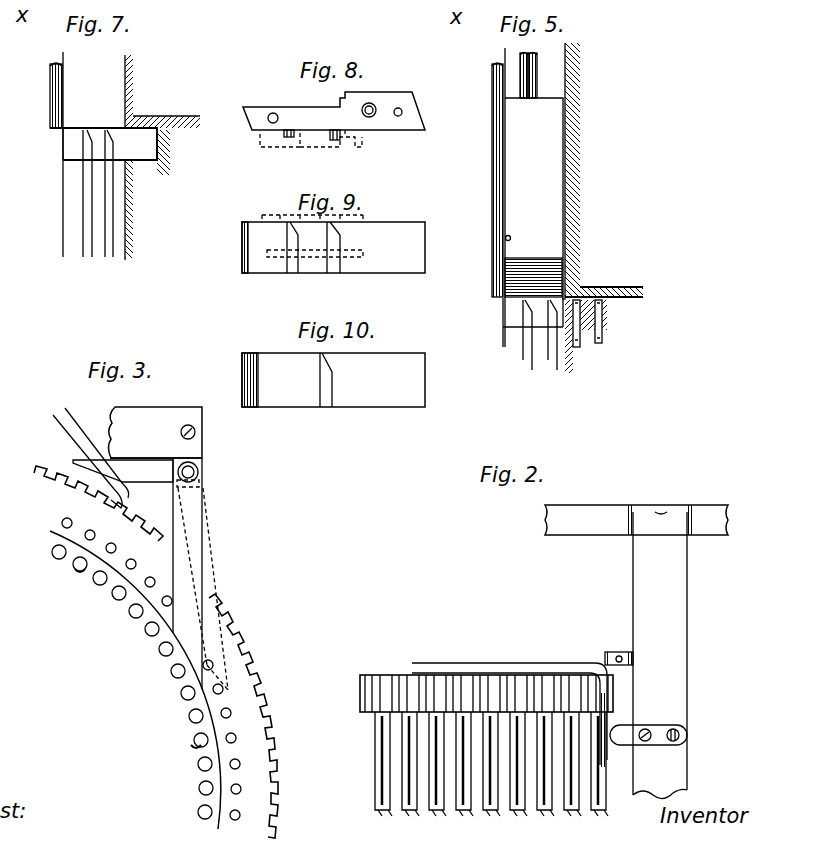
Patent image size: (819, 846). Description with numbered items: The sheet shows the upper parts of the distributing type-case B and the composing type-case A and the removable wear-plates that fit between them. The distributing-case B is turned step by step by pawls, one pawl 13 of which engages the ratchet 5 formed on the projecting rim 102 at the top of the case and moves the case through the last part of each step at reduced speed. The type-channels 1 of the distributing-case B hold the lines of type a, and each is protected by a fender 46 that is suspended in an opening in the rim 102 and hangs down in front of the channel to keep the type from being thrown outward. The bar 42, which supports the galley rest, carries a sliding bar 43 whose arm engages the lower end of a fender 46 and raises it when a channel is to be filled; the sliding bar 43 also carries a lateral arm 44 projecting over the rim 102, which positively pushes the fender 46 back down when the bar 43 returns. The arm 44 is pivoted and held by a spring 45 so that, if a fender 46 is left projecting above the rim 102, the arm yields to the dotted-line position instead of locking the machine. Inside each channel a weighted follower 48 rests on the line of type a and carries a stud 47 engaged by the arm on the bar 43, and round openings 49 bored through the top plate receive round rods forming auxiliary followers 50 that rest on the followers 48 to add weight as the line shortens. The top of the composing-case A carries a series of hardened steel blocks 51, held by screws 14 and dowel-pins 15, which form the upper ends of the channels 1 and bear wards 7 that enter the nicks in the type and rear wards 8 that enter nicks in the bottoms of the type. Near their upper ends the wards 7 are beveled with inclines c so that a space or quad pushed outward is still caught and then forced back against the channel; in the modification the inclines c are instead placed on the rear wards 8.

In FIG. 7, the type-channels 1 is at (83, 163).
In FIG. 2, the type-channels 1 is at (390, 816).
In FIG. 3, the ratchet 5 is at (232, 622).
In FIG. 2, the ratchet 5 is at (395, 675).
In FIG. 7, the wards 7 is at (105, 148).
In FIG. 8, the wards 7 is at (299, 130).
In FIG. 9, the wards 7 is at (318, 264).
In FIG. 5, the wards 7 is at (534, 364).
In FIG. 8, the rear wards 8 is at (340, 100).
In FIG. 10, the rear wards 8 is at (334, 376).
In FIG. 3, the pawl 13 is at (130, 498).
In FIG. 5, the screws 14 is at (580, 348).
In FIG. 5, the dowel-pins 15 is at (601, 343).
In FIG. 2, the bar 42 is at (660, 653).
In FIG. 3, the sliding bar 43 is at (203, 466).
In FIG. 2, the sliding bar 43 is at (648, 752).
In FIG. 3, the lateral arm 44 is at (212, 590).
In FIG. 2, the lateral arm 44 is at (540, 668).
In FIG. 3, the spring 45 is at (205, 488).
In FIG. 2, the spring 45 is at (607, 722).
In FIG. 7, the fenders 46 is at (50, 97).
In FIG. 5, the fenders 46 is at (492, 172).
In FIG. 3, the fenders 46 is at (136, 565).
In FIG. 2, the fenders 46 is at (378, 778).
In FIG. 5, the studs 47 is at (516, 233).
In FIG. 5, the follower 48 is at (534, 199).
In FIG. 5, the round openings 49 is at (530, 54).
In FIG. 3, the round openings 49 is at (144, 633).
In FIG. 5, the auxiliary followers 50 is at (538, 78).
In FIG. 3, the auxiliary followers 50 is at (77, 572).
In FIG. 7, the removable plates or blocks 51 is at (103, 144).
In FIG. 8, the removable plates or blocks 51 is at (332, 130).
In FIG. 9, the removable plates or blocks 51 is at (333, 247).
In FIG. 10, the removable plates or blocks 51 is at (333, 380).
In FIG. 5, the removable plates or blocks 51 is at (533, 322).
In FIG. 3, the projecting rim 102 is at (250, 723).
In FIG. 2, the projecting rim 102 is at (366, 713).
In FIG. 7, the composing type-case A is at (147, 194).
In FIG. 5, the composing type-case A is at (600, 336).
In FIG. 7, the distributing type-case B is at (162, 157).
In FIG. 5, the distributing type-case B is at (604, 171).
In FIG. 3, the distributing type-case B is at (135, 680).
In FIG. 2, the distributing type-case B is at (509, 816).
In FIG. 8, the line of type a is at (258, 138).
In FIG. 9, the line of type a is at (350, 250).
In FIG. 5, the line of type a is at (533, 272).
In FIG. 8, the inclines c is at (321, 154).
In FIG. 9, the inclines c is at (340, 229).
In FIG. 10, the inclines c is at (331, 357).